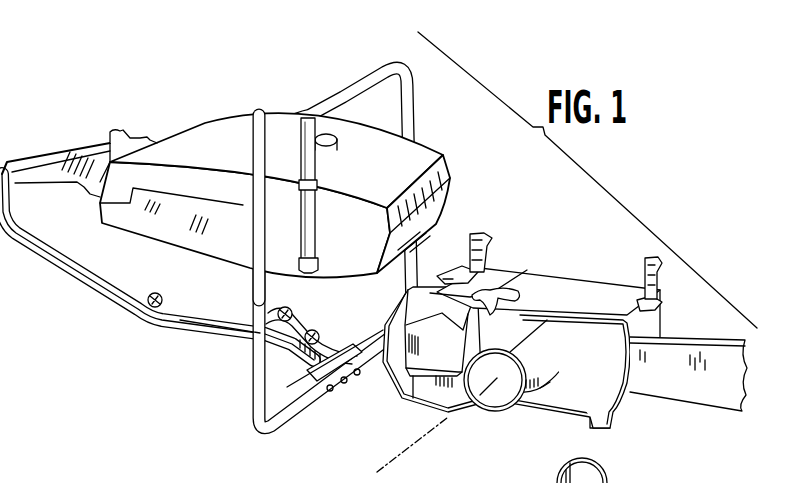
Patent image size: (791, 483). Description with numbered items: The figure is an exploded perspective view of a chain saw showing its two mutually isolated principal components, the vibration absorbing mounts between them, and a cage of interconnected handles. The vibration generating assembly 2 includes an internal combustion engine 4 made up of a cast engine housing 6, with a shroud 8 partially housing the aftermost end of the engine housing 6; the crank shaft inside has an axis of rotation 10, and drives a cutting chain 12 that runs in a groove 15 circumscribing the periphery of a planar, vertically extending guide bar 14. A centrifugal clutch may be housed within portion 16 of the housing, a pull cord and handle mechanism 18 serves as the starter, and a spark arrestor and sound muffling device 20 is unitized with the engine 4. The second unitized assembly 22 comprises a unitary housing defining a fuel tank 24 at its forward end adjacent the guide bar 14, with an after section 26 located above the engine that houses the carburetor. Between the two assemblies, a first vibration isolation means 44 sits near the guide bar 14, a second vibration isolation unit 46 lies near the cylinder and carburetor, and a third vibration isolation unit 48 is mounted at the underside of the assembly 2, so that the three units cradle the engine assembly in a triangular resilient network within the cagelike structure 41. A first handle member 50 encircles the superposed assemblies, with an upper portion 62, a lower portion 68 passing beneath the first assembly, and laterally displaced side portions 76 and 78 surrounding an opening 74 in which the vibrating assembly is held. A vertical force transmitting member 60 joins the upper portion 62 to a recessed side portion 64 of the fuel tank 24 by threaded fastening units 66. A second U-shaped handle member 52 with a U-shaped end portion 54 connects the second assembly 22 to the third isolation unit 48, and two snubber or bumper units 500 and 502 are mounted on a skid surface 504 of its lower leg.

The vibration generating assembly 2 is at (563, 269).
The internal combustion engine 4 is at (400, 381).
The engine housing 6 is at (600, 290).
The shroud 8 is at (393, 358).
The axis of rotation 10 is at (385, 465).
The cutting chain 12 is at (685, 336).
The guide bar 14 is at (712, 393).
The groove 15 is at (723, 337).
The housing portion 16 is at (495, 405).
The pull cord and handle mechanism 18 is at (517, 294).
The spark arrestor and sound muffling device 20 is at (424, 392).
The second unitized assembly 22 is at (279, 104).
The fuel tank 24 is at (444, 185).
The after section of the fuel tank assembly 26 is at (143, 223).
The cagelike structure 41 is at (193, 344).
The first vibration isolation means 44 is at (657, 279).
The second vibration isolation unit 46 is at (488, 252).
The third vibration isolation unit 48 is at (293, 307).
The first handle member 50 is at (380, 68).
The second handle member 52 is at (50, 166).
The U-shaped end portion 54 is at (52, 263).
The force transmitting member 60 is at (316, 157).
The upper portion of the handle 62 is at (266, 135).
The recessed side portion 64 is at (318, 184).
The threaded fastening units 66 is at (312, 262).
The lower portion of the handle member 68 is at (287, 409).
The opening 74 is at (416, 262).
The side portion 76 is at (410, 110).
The side portion 78 is at (253, 379).
The snubber or bumper unit 500 is at (160, 295).
The snubber or bumper unit 502 is at (321, 331).
The surface 504 is at (202, 318).